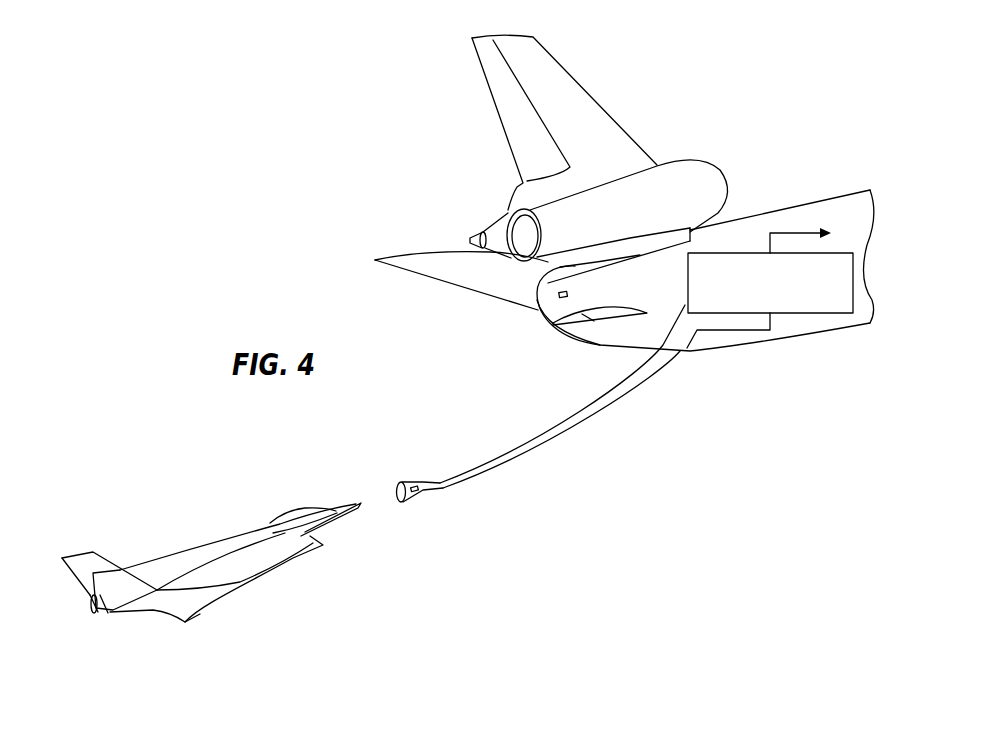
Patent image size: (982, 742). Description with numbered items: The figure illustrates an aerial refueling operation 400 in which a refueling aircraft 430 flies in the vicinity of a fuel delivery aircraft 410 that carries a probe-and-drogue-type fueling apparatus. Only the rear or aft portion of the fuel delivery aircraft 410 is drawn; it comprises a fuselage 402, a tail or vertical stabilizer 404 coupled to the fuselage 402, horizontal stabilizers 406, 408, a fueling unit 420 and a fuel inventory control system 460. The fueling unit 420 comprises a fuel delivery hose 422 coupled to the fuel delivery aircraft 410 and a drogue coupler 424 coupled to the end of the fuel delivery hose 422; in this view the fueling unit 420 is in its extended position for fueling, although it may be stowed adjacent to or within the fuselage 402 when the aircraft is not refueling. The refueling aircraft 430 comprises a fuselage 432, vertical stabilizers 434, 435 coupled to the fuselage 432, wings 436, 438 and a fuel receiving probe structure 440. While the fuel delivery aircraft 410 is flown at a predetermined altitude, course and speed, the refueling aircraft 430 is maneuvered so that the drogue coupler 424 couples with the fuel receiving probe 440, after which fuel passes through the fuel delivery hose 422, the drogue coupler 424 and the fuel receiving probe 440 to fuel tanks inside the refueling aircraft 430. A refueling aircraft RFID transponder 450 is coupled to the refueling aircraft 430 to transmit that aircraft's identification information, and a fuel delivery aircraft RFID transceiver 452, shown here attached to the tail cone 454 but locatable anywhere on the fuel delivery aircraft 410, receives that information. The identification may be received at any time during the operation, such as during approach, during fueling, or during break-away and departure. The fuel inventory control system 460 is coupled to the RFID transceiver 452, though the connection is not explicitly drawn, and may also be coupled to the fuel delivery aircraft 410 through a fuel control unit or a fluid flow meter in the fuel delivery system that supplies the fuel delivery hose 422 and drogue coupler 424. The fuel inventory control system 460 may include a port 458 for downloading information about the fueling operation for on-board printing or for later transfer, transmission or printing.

The aerial refueling operation 400 is at (383, 154).
The fuselage 402 is at (730, 350).
The vertical stabilizer 404 is at (587, 94).
The horizontal stabilizer 406 is at (440, 287).
The horizontal stabilizer 408 is at (560, 314).
The fuel delivery aircraft 410 is at (809, 358).
The fueling unit 420 is at (557, 450).
The fuel delivery hose 422 is at (573, 420).
The drogue coupler 424 is at (403, 482).
The refueling aircraft 430 is at (288, 612).
The fuselage 432 is at (310, 565).
The vertical stabilizer 434 is at (90, 558).
The vertical stabilizer 435 is at (120, 570).
The wing 436 is at (193, 547).
The wing 438 is at (200, 617).
The fuel receiving probe structure 440 is at (352, 515).
The refueling aircraft RFID transponder 450 is at (333, 513).
The fuel delivery aircraft RFID transceiver 452 is at (520, 300).
The tail cone 454 is at (567, 330).
The port 458 is at (807, 231).
The fuel inventory control system 460 is at (763, 253).